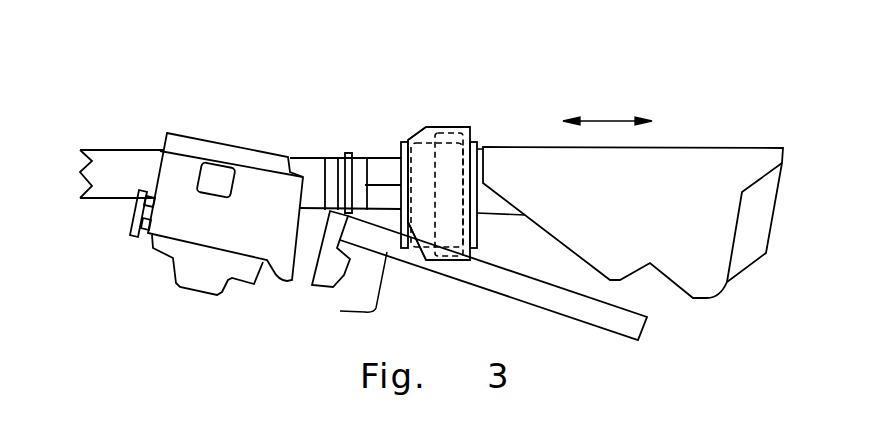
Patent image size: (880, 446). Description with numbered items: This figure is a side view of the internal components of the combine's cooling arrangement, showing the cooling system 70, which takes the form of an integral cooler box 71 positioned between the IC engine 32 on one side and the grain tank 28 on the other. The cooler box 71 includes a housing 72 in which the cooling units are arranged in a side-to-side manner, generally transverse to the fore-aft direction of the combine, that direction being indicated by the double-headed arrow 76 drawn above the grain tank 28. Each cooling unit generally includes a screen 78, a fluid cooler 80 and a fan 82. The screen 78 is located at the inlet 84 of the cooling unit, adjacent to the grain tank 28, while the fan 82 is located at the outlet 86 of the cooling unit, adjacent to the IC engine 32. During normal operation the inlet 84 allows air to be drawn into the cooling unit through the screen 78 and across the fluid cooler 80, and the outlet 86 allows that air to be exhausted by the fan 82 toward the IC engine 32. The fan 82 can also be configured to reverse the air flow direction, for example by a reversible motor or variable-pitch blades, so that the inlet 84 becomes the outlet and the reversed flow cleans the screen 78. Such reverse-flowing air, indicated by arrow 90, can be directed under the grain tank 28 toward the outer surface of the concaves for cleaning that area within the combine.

The IC engine 32 is at (237, 149).
The fan 82 is at (409, 143).
The cooling system 70 is at (442, 127).
The cooler box 71 is at (442, 115).
The housing 72 is at (457, 127).
The screen 78 is at (475, 143).
The outlet 86 is at (400, 149).
The inlet 84 is at (485, 227).
The fluid cooler 80 is at (443, 247).
The arrow indicating reverse air flow direction 90 is at (564, 265).
The grain tank 28 is at (720, 147).
The arrow indicating fore-aft direction 76 is at (607, 120).